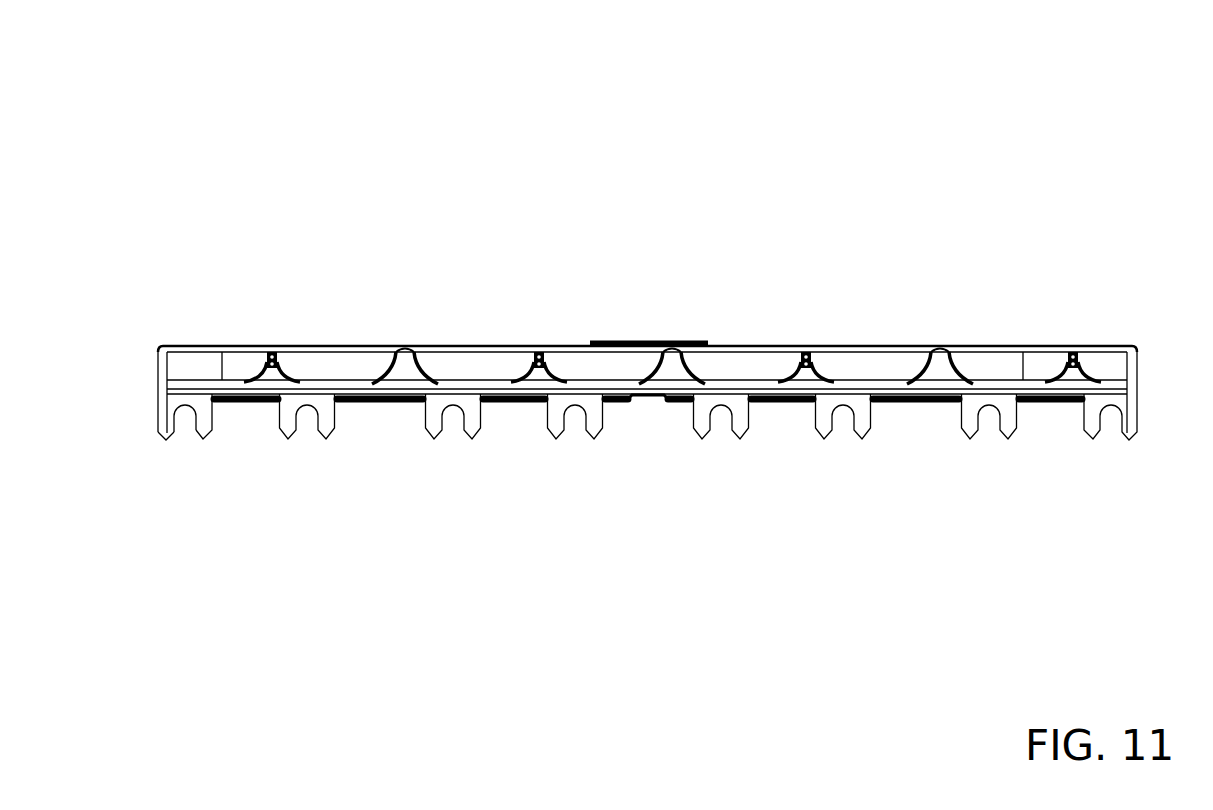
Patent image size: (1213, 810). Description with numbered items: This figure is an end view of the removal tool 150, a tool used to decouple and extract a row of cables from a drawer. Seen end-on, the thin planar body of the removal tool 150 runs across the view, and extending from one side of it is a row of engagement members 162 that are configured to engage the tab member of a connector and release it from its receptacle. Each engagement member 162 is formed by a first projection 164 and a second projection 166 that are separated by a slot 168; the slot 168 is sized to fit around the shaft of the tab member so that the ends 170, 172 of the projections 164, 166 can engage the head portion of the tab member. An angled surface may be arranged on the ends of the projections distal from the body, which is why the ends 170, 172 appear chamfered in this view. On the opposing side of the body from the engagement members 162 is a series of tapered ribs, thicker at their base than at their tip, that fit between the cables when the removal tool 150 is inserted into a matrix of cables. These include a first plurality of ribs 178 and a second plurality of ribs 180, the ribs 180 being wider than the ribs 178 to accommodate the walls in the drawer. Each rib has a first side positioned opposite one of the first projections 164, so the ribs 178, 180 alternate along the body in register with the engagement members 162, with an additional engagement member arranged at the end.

The removal tool 150 is at (375, 95).
The engagement member 162 is at (340, 448).
The first projection 164 is at (158, 423).
The second projection 166 is at (207, 408).
The slot 168 is at (183, 450).
The end of first projection 170 is at (163, 438).
The end of second projection 172 is at (200, 437).
The first plurality of ribs 178 is at (260, 350).
The second plurality of ribs 180 is at (398, 350).